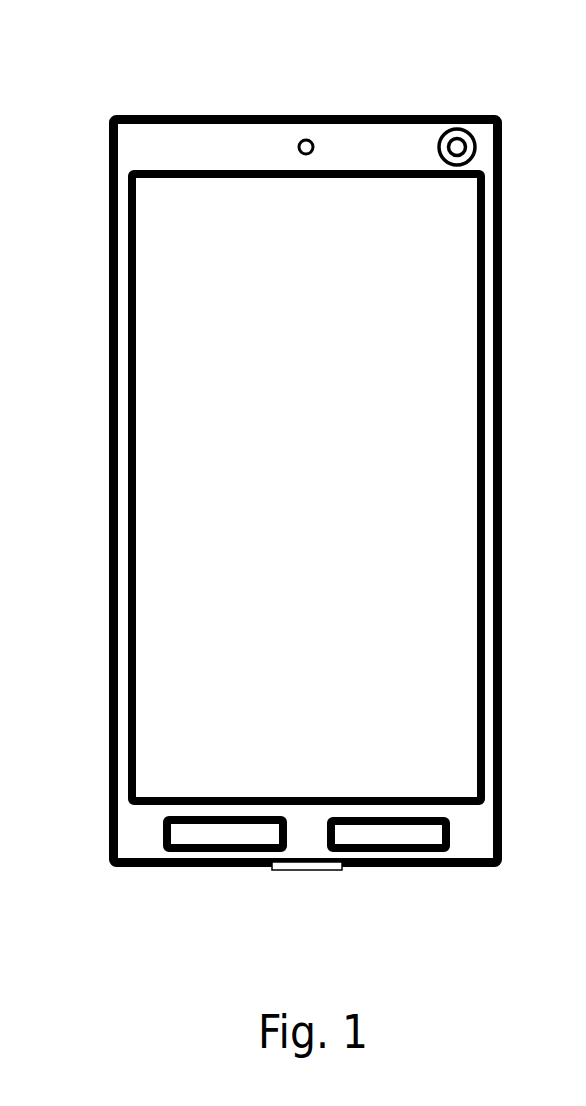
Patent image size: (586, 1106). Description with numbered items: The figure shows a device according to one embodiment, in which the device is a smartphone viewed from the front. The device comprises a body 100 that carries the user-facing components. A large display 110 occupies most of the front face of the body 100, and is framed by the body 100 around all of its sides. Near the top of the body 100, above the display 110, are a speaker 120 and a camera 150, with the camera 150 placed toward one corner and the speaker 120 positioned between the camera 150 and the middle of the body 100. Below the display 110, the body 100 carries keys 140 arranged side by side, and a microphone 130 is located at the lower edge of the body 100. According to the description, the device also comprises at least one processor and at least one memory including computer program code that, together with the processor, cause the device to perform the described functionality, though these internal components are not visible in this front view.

The body 100 is at (125, 148).
The display 110 is at (158, 383).
The speaker 120 is at (300, 141).
The microphone 130 is at (303, 870).
The keys 140 is at (343, 816).
The camera 150 is at (468, 139).